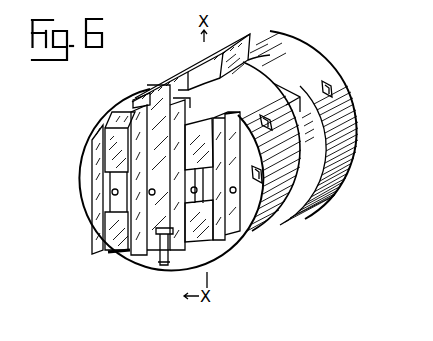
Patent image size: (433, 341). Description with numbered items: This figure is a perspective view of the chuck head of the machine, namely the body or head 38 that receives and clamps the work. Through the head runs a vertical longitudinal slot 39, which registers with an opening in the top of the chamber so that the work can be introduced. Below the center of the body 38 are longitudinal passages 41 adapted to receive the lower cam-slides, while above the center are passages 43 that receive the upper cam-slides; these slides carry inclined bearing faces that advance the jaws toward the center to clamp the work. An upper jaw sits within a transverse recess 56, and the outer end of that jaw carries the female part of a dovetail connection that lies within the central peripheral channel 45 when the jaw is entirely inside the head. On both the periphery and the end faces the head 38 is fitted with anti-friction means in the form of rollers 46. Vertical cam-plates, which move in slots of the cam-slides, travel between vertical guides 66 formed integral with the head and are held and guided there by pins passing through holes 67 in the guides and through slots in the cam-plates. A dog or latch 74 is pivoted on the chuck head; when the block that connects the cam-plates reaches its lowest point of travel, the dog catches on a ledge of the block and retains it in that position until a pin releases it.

The body or head 38 is at (196, 161).
The vertical longitudinal slot 39 is at (262, 36).
The longitudinal passages 41 is at (127, 245).
The passages 43 is at (108, 152).
The central peripheral channel 45 is at (196, 63).
The rollers 46 is at (333, 86).
The transverse recess 56 is at (287, 85).
The vertical guides 66 is at (133, 100).
The holes 67 is at (111, 193).
The dog or latch 74 is at (157, 268).